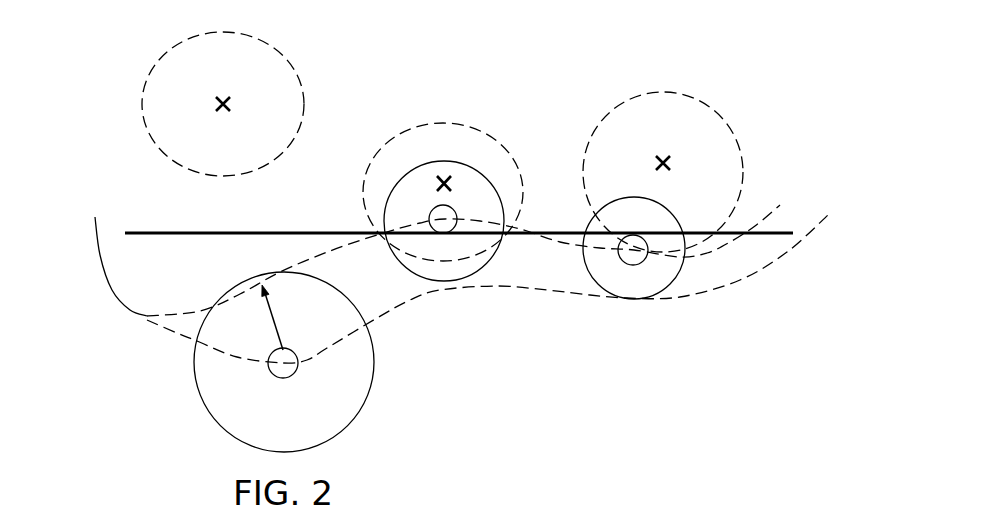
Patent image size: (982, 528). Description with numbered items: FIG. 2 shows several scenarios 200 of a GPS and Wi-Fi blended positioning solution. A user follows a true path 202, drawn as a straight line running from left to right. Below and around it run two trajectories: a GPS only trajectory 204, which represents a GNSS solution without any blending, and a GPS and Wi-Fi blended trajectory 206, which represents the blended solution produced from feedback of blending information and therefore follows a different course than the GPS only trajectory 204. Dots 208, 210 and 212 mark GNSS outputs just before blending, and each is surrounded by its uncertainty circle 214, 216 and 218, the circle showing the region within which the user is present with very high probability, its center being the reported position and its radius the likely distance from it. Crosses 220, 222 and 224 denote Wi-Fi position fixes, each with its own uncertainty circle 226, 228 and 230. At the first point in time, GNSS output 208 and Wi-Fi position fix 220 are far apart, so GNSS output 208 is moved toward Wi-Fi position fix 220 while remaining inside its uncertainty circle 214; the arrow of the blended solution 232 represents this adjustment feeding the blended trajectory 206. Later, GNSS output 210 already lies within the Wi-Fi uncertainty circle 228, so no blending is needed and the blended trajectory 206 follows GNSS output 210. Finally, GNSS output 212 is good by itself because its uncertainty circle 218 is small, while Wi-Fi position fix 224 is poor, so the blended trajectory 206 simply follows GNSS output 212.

The system 200 is at (560, 82).
The true path 202 is at (163, 232).
The GPS only trajectory 204 is at (752, 279).
The GPS and Wi-Fi blended trajectory 206 is at (185, 315).
The GNSS output 208 is at (283, 378).
The GNSS output 210 is at (458, 222).
The GNSS output 212 is at (633, 265).
The uncertainty circle 214 is at (194, 381).
The uncertainty circle 216 is at (392, 187).
The uncertainty circle 218 is at (591, 219).
The Wi-Fi position fix 220 is at (224, 95).
The Wi-Fi position fix 222 is at (443, 174).
The Wi-Fi position fix 224 is at (663, 153).
The uncertainty circle 226 is at (145, 102).
The uncertainty circle 228 is at (412, 125).
The uncertainty circle 230 is at (722, 112).
The blended solution 232 is at (277, 329).